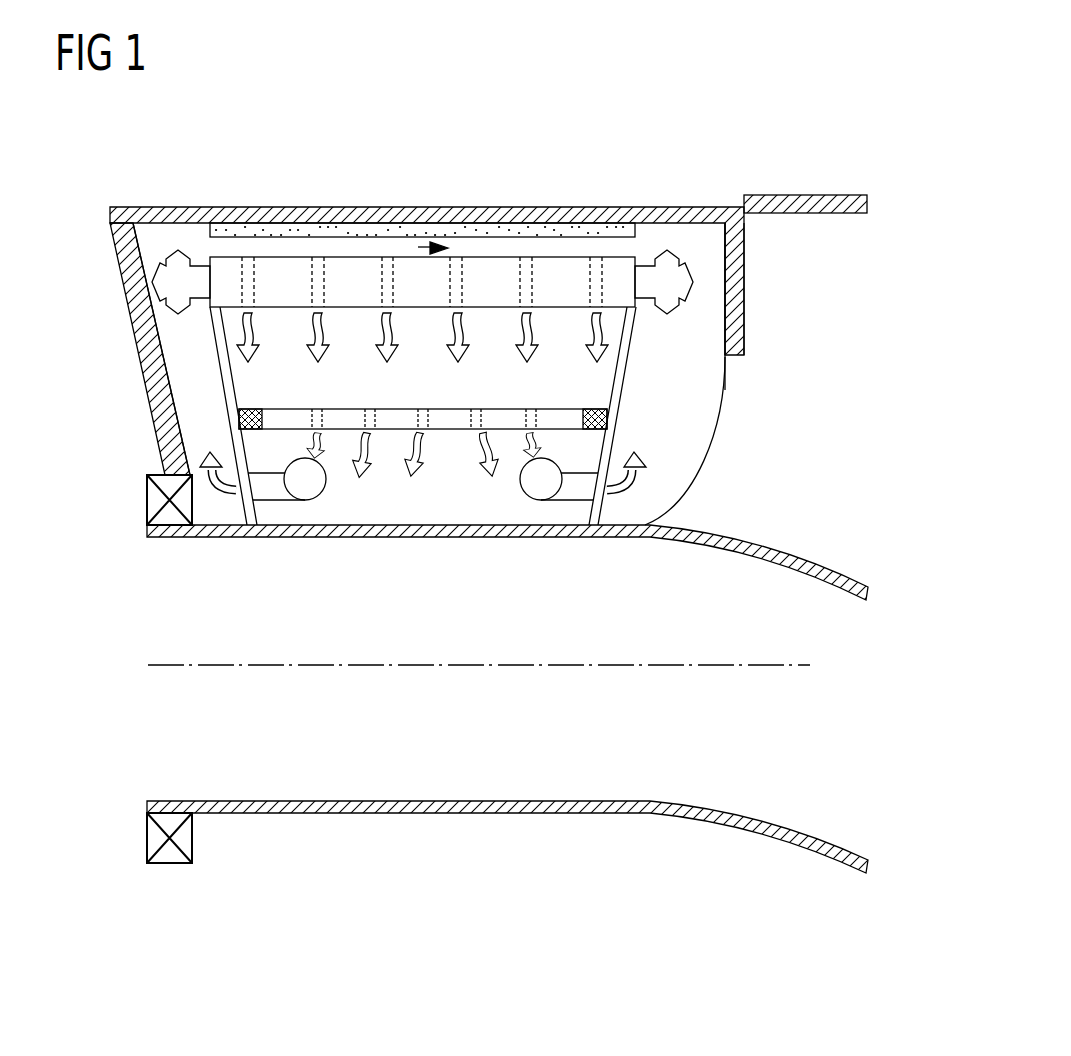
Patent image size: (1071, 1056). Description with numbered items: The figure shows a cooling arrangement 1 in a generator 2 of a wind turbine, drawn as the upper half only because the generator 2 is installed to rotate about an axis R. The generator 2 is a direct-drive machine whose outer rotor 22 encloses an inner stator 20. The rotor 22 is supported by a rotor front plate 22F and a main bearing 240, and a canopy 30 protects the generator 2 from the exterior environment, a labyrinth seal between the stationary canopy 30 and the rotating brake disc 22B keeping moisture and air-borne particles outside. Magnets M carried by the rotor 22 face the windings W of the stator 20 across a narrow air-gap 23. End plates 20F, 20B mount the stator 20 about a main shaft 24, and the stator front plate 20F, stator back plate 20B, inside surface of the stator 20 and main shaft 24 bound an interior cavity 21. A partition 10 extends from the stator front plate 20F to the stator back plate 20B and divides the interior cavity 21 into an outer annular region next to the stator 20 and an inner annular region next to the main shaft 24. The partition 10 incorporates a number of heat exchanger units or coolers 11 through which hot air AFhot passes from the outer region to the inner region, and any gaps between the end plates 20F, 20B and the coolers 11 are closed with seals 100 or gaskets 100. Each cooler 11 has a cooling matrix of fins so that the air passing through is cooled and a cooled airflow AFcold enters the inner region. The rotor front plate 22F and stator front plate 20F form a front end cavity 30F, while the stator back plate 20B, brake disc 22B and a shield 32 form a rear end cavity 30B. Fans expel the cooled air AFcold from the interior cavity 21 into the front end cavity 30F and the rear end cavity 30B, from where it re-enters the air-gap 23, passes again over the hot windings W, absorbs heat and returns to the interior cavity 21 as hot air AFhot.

The cooling arrangement 1 is at (770, 108).
The generator 2 is at (93, 228).
The partition 10 is at (291, 382).
The heat exchanger unit 11 is at (560, 418).
The stator 20 is at (233, 268).
The stator front plate 20F is at (218, 350).
The stator back plate 20B is at (627, 376).
The interior cavity 21 is at (362, 389).
The rotor 22 is at (465, 213).
The rotor front plate 22F is at (124, 282).
The brake disc 22B is at (746, 292).
The air-gap 23 is at (418, 247).
The main shaft 24 is at (805, 546).
The canopy 30 is at (305, 212).
The front end cavity 30F is at (160, 316).
The rear end cavity 30B is at (725, 370).
The shield 32 is at (714, 430).
The seal 100 is at (607, 423).
The main bearing 240 is at (157, 502).
The magnets M is at (550, 232).
The windings W is at (196, 284).
The axis R is at (478, 668).
The hot air AFhot is at (390, 352).
The cooled airflow AFcold is at (697, 492).